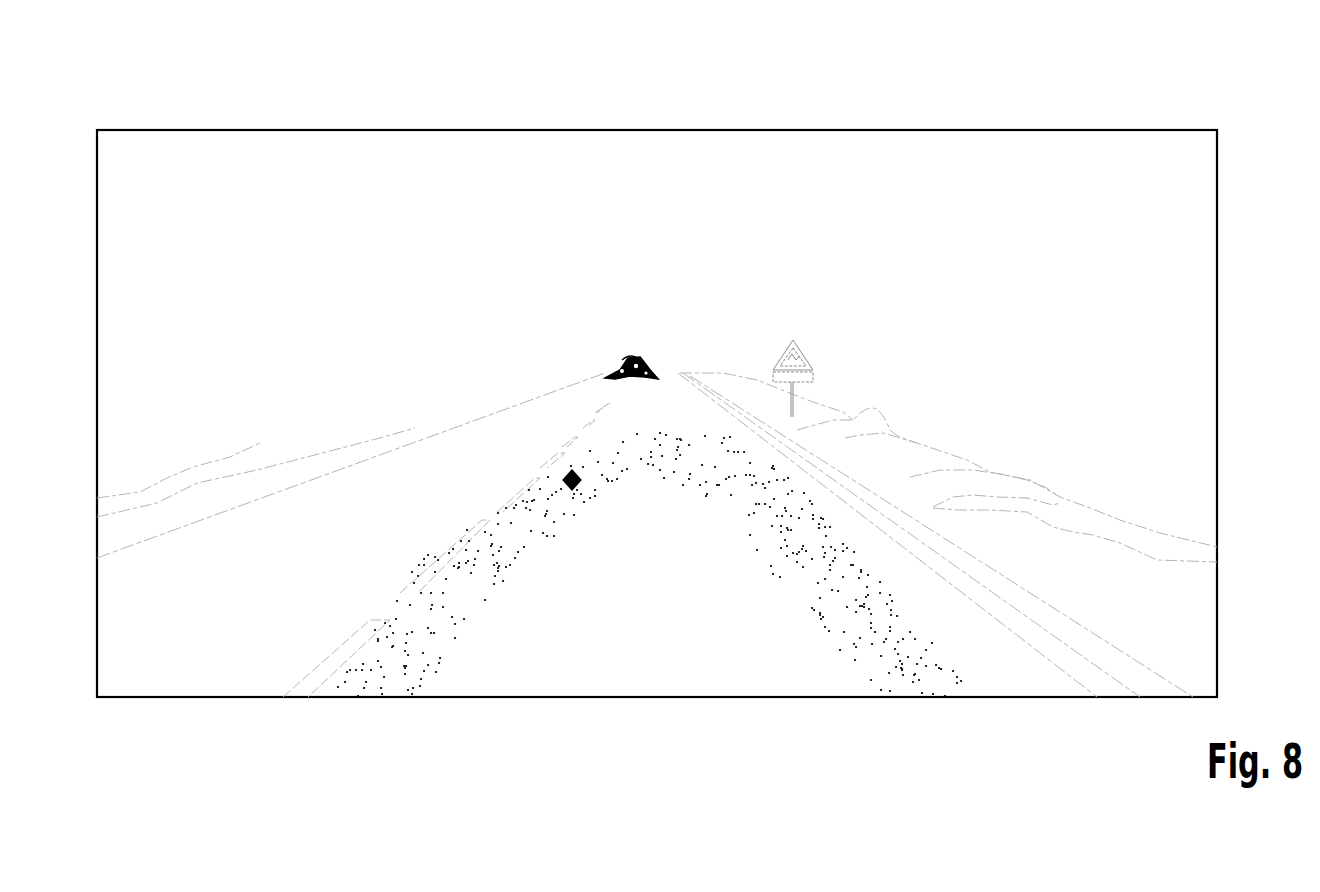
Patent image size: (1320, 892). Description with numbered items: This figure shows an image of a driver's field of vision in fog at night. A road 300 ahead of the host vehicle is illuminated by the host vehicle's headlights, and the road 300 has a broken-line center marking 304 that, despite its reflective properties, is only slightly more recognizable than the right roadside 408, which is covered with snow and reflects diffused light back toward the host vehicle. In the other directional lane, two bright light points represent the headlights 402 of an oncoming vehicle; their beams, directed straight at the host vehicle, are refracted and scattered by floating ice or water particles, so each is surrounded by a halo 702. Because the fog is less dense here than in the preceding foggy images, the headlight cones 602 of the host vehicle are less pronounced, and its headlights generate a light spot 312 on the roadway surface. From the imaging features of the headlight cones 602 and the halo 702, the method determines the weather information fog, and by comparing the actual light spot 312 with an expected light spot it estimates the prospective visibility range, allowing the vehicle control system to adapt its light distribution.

The road 300 is at (682, 675).
The broken-line center marking 304 is at (303, 683).
The light spot 312 is at (830, 572).
The headlights of an oncoming vehicle 402 is at (630, 360).
The right roadside 408 is at (973, 482).
The headlight cones 602 is at (583, 495).
The halo 702 is at (655, 364).